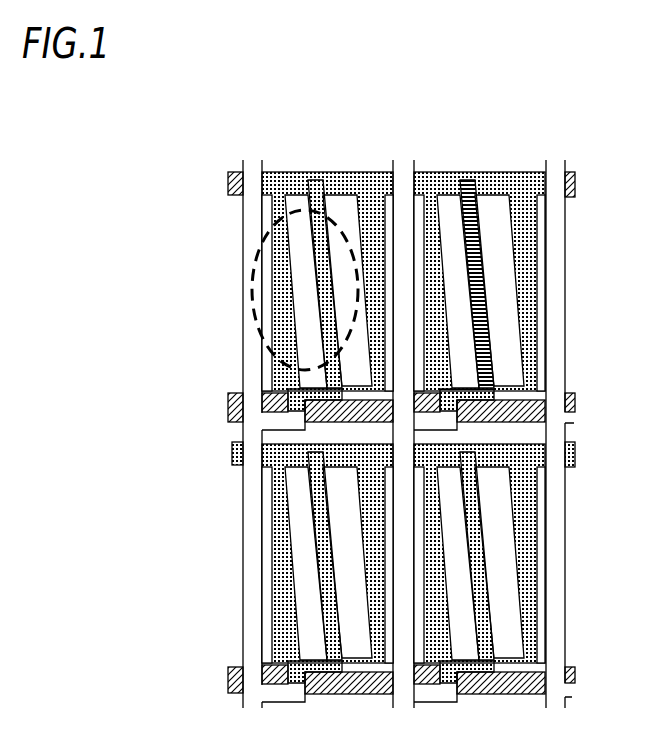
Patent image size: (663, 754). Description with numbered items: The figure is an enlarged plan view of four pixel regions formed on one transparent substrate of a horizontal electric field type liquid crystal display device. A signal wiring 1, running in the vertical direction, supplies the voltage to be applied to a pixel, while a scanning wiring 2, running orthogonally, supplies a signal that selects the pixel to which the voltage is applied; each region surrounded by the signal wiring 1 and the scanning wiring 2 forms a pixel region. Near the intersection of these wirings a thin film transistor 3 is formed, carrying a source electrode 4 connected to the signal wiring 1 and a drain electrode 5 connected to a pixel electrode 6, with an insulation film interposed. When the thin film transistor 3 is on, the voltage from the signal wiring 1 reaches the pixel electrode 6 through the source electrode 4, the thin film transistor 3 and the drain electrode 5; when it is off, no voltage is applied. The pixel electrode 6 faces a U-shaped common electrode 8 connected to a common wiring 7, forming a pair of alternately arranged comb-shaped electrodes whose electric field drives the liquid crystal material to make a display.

The signal wiring 1 is at (245, 348).
The scanning wiring 2 is at (233, 400).
The thin film transistor 3 is at (495, 405).
The source electrode 4 is at (292, 422).
The drain electrode 5 is at (461, 414).
The pixel electrode 6 is at (481, 284).
The common wiring 7 is at (518, 456).
The common electrode 8 is at (540, 228).